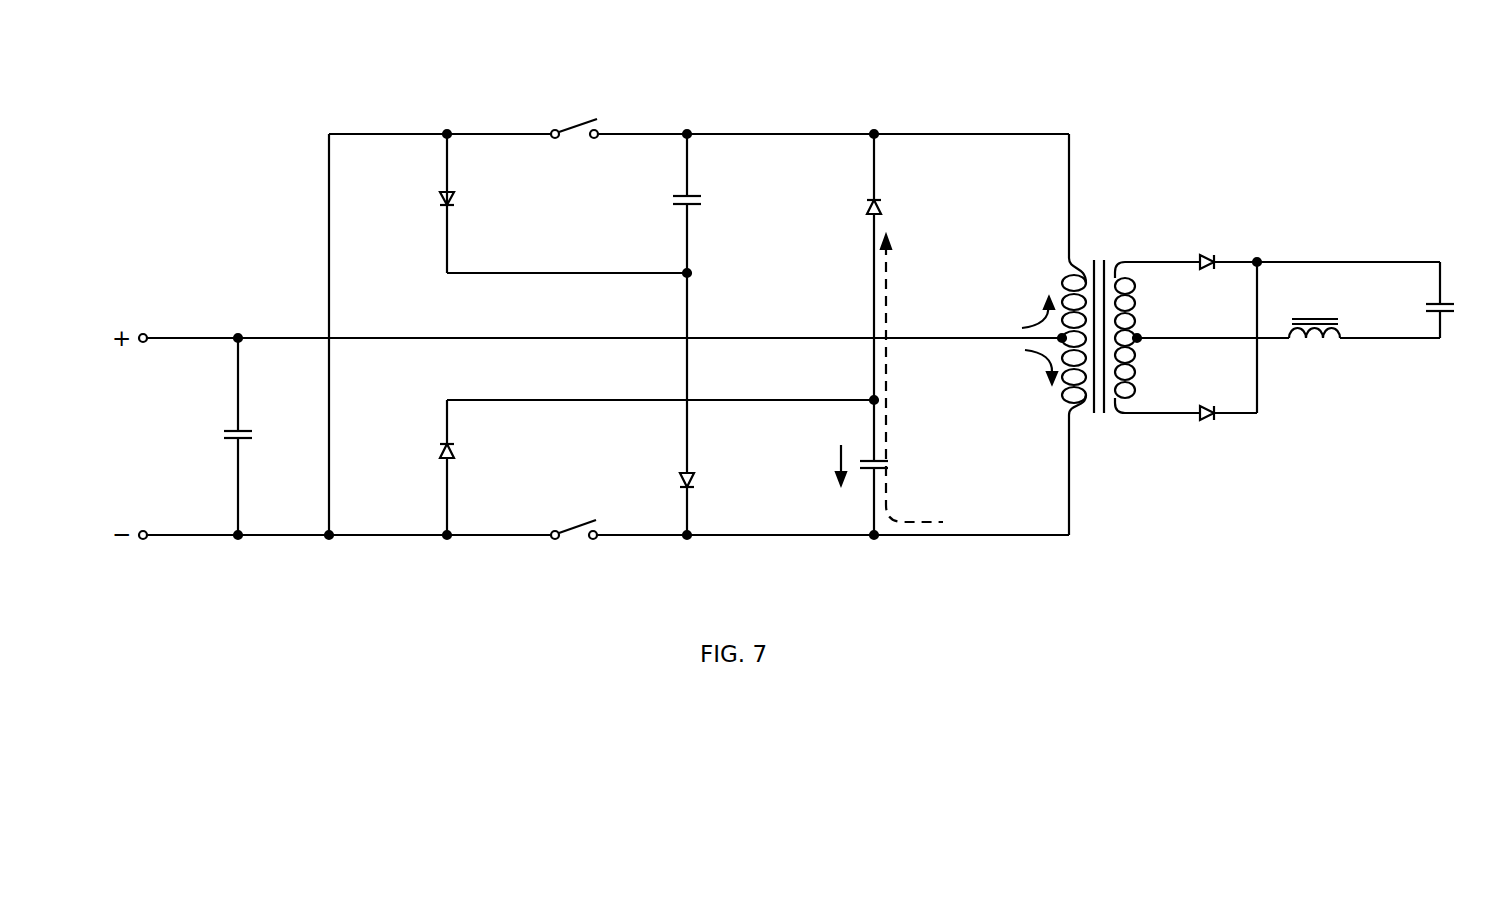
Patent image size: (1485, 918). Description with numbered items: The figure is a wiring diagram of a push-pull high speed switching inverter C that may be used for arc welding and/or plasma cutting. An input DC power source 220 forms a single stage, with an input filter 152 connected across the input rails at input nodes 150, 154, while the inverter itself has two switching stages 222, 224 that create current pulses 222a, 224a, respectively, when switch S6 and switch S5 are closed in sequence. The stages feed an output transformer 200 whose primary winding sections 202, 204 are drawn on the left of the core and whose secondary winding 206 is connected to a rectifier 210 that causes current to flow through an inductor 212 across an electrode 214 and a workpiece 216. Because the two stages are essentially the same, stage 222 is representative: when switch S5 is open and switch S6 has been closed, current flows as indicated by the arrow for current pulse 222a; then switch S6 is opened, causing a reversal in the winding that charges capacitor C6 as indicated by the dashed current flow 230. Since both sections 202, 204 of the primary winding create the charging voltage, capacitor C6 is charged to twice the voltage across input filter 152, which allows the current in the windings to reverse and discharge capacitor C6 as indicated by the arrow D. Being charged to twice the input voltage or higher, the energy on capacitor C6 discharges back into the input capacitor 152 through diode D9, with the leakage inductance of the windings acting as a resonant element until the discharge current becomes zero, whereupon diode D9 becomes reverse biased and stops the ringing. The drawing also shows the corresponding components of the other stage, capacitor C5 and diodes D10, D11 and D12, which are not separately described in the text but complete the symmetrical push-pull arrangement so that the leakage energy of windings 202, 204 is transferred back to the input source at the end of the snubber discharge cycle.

The input DC power source 220 is at (157, 327).
The positive input node 150 is at (240, 336).
The input filter 152 is at (248, 425).
The negative input node 154 is at (240, 537).
The switching stage 224 is at (773, 126).
The switching stage 222 is at (993, 550).
The current flow 230 is at (886, 290).
The primary winding section 202 is at (1068, 283).
The primary winding section 204 is at (1068, 393).
The current pulse 224a is at (1043, 315).
The current pulse 222a is at (1043, 357).
The output transformer 200 is at (1106, 232).
The secondary winding 206 is at (1128, 320).
The rectifier 210 is at (1232, 239).
The inductor 212 is at (1312, 347).
The electrode 214 is at (1428, 297).
The workpiece 216 is at (1447, 313).
The push-pull high speed switching inverter C is at (1047, 98).
The arrow D is at (832, 465).
The switch S5 is at (574, 114).
The switch S6 is at (574, 548).
The capacitor C5 is at (669, 301).
The capacitor C6 is at (890, 469).
The diode D9 is at (896, 265).
The diode D10 is at (544, 203).
The diode D11 is at (638, 467).
The diode D12 is at (661, 502).